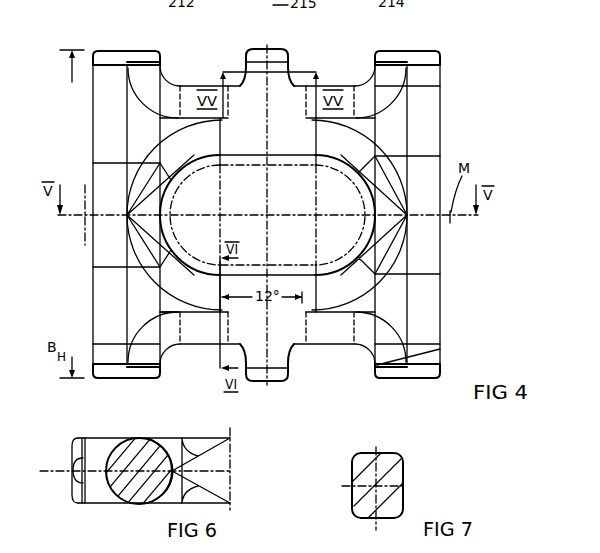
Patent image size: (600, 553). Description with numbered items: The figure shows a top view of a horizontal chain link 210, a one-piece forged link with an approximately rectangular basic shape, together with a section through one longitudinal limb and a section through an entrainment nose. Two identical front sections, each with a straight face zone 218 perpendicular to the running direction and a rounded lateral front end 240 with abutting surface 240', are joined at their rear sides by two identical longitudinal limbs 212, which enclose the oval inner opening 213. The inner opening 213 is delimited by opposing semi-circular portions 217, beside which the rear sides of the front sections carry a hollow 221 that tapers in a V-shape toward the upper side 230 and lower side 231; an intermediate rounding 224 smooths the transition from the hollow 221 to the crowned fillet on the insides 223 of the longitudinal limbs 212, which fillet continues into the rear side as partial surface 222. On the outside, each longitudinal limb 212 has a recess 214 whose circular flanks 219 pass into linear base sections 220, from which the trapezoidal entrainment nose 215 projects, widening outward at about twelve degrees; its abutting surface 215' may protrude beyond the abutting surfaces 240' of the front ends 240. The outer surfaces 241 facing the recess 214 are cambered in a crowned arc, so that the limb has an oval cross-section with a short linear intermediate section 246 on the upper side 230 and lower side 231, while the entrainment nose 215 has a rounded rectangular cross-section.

In FIG. 4, the horizontal chain link 210 is at (484, 83).
In FIG. 4, the longitudinal limb 212 is at (347, 117).
In FIG. 6, the longitudinal limb 212 is at (148, 483).
In FIG. 4, the inner opening 213 is at (300, 198).
In FIG. 4, the recess 214 is at (181, 56).
In FIG. 4, the entrainment nose 215 is at (278, 54).
In FIG. 7, the entrainment nose 215 is at (402, 482).
In FIG. 4, the abutting surface 215' is at (273, 214).
In FIG. 4, the semi-circular portion 217 is at (163, 208).
In FIG. 4, the face zone 218 is at (441, 143).
In FIG. 4, the circular shaped flank 219 is at (372, 81).
In FIG. 4, the linear base section 220 is at (324, 85).
In FIG. 4, the hollow 221 is at (171, 228).
In FIG. 4, the partial surface 222 is at (180, 140).
In FIG. 4, the inside of longitudinal limb 223 is at (259, 128).
In FIG. 6, the inside of longitudinal limb 223 is at (163, 445).
In FIG. 4, the intermediate rounding 224 is at (153, 190).
In FIG. 6, the upper side 230 is at (113, 437).
In FIG. 7, the upper side 230 is at (382, 453).
In FIG. 6, the lower side 231 is at (120, 505).
In FIG. 7, the lower side 231 is at (370, 518).
In FIG. 4, the front end 240 is at (268, 196).
In FIG. 4, the abutting surface of front end 240' is at (110, 39).
In FIG. 4, the outer surface of longitudinal limb 241 is at (188, 97).
In FIG. 6, the outer surface of longitudinal limb 241 is at (102, 463).
In FIG. 4, the linear intermediate section 246 is at (222, 297).
In FIG. 6, the linear intermediate section 246 is at (137, 438).